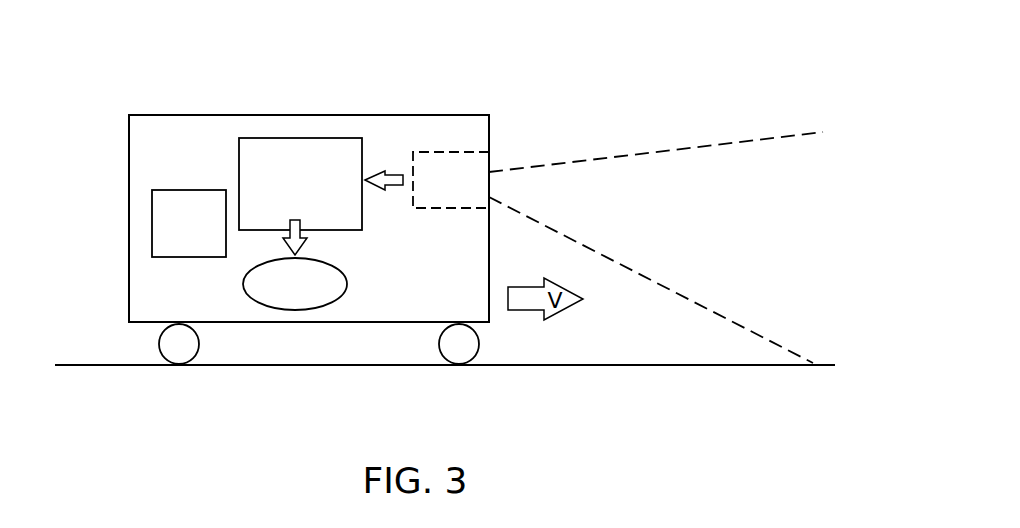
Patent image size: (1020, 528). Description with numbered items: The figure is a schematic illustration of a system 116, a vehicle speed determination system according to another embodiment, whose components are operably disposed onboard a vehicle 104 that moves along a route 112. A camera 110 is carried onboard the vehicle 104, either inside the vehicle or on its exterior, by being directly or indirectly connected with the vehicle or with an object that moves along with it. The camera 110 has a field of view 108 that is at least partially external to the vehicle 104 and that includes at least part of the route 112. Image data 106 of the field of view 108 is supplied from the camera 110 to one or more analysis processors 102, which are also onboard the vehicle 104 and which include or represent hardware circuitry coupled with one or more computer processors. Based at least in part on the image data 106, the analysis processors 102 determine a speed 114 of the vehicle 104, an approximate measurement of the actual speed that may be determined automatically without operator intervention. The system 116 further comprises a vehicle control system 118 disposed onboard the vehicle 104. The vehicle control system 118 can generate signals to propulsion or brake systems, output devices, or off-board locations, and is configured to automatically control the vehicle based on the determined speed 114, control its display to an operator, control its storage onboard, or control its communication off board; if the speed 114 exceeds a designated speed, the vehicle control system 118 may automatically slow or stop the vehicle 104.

The analysis processor 102 is at (281, 197).
The vehicle 104 is at (128, 257).
The image data 106 is at (393, 190).
The field of view 108 is at (602, 156).
The camera 110 is at (434, 195).
The route 112 is at (580, 367).
The speed 114 is at (276, 295).
The system 116 is at (483, 78).
The vehicle control system 118 is at (170, 237).